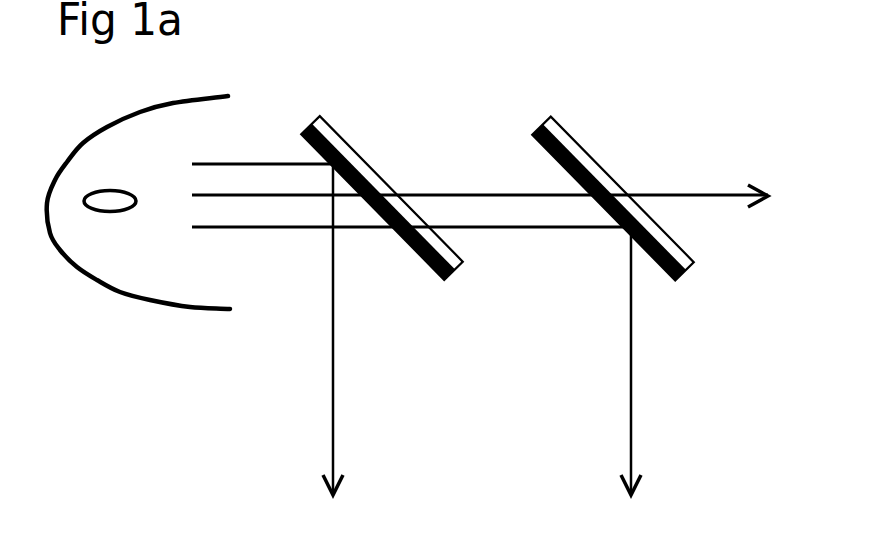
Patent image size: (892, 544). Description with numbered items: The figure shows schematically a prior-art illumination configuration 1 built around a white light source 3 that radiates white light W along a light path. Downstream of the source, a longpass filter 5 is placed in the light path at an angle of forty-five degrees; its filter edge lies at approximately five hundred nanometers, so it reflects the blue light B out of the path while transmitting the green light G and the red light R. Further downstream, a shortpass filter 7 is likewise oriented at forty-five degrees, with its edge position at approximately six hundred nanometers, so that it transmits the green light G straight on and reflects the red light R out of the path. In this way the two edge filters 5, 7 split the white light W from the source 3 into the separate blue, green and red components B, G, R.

The illumination configuration 1 is at (378, 53).
The white light lamp 3 is at (122, 293).
The longpass filter 5 is at (378, 170).
The shortpass filter 7 is at (598, 160).
The white light W is at (461, 195).
The green light G is at (743, 173).
The blue light B is at (352, 329).
The red light R is at (651, 361).